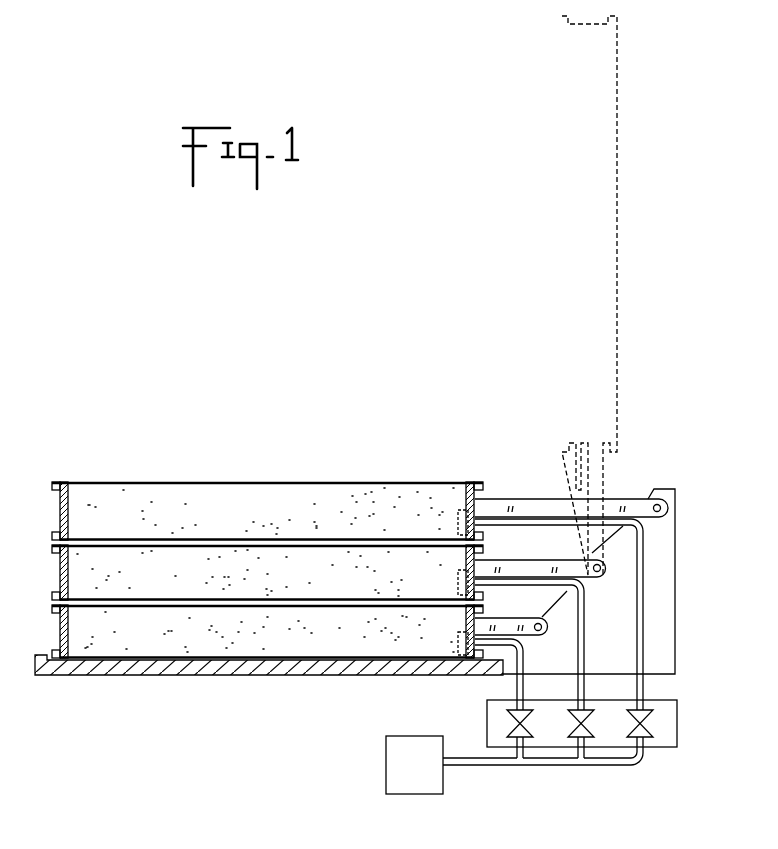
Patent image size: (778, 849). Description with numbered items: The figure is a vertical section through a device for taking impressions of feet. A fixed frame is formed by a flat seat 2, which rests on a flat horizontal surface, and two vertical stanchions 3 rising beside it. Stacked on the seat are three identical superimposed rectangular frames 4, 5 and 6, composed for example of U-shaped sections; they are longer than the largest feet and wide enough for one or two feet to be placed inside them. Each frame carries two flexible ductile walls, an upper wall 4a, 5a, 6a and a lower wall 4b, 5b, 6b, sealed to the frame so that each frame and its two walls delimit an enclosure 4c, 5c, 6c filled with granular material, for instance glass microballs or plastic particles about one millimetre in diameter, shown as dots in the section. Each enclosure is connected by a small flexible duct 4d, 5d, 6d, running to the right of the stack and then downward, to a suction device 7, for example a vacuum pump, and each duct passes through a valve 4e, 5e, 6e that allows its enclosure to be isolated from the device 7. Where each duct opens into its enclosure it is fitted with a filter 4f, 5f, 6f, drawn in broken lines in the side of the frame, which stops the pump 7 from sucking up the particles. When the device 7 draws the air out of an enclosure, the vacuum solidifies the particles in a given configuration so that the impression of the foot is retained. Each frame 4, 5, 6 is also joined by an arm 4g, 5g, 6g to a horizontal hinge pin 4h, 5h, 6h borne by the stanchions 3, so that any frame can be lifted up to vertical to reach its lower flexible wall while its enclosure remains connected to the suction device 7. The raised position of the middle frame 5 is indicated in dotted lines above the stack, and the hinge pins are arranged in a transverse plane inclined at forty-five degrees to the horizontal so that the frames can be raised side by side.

The flat seat 2 is at (128, 678).
The vertical stanchions 3 is at (660, 613).
The rectangular frame 4 is at (250, 631).
The upper wall 4a is at (163, 607).
The lower wall 4b is at (208, 658).
The enclosure 4c is at (372, 643).
The flexible duct 4d is at (519, 693).
The valve 4e is at (532, 739).
The filter 4f is at (457, 641).
The arm 4g is at (503, 618).
The horizontal hinge pin 4h is at (541, 632).
The rectangular frame 5 is at (250, 572).
The upper wall 5a is at (271, 547).
The lower wall 5b is at (277, 599).
The enclosure 5c is at (372, 581).
The flexible duct 5d is at (584, 693).
The valve 5e is at (590, 739).
The filter 5f is at (457, 583).
The arm 5g is at (510, 560).
The horizontal hinge pin 5h is at (598, 572).
The rectangular frame 6 is at (250, 490).
The upper wall 6a is at (124, 482).
The lower wall 6b is at (188, 539).
The enclosure 6c is at (372, 523).
The flexible duct 6d is at (645, 693).
The valve 6e is at (653, 739).
The filter 6f is at (457, 518).
The arm 6g is at (515, 499).
The horizontal hinge pin 6h is at (665, 505).
The suction device 7 is at (393, 775).